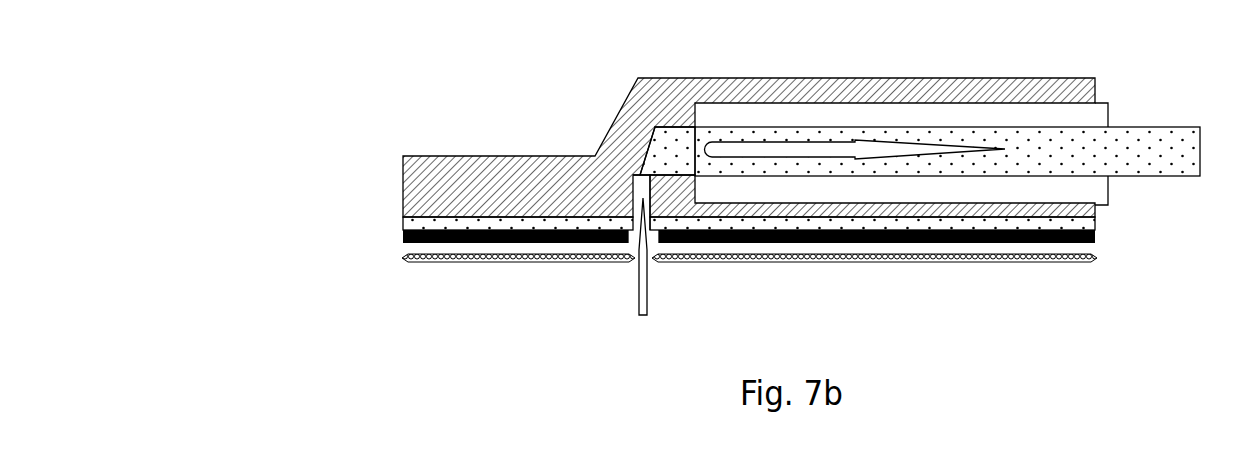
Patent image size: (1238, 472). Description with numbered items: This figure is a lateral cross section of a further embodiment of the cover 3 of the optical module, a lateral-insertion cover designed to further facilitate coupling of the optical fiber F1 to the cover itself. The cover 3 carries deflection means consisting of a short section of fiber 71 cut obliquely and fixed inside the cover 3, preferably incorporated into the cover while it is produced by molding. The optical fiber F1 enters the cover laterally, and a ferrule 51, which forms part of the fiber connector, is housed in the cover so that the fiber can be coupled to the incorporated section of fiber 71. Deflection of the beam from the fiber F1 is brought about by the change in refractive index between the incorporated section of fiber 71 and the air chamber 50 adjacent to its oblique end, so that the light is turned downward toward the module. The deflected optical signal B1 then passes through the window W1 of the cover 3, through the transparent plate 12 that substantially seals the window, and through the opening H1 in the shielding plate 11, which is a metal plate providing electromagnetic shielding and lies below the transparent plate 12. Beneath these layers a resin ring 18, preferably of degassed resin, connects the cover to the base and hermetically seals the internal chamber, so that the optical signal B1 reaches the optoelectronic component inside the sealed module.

The cover 3 is at (507, 57).
The shielding plate 11 is at (402, 240).
The transparent plate 12 is at (402, 220).
The resin ring 18 is at (1040, 261).
The air chamber 50 is at (641, 152).
The ferrule 51 is at (1097, 190).
The section of fiber 71 is at (670, 150).
The optical signal B1 is at (792, 148).
The optical fiber F1 is at (1140, 143).
The opening H1 is at (634, 237).
The window W1 is at (638, 207).